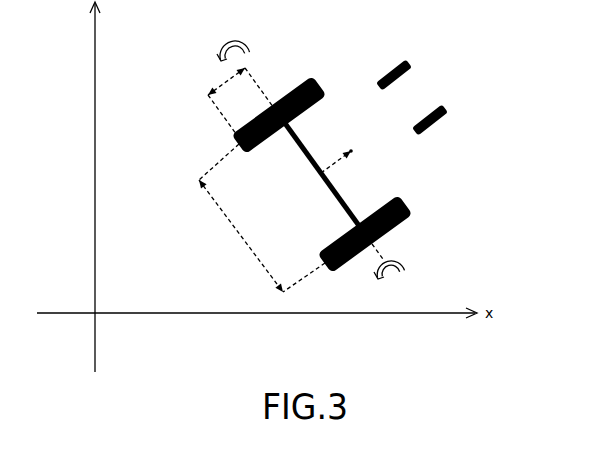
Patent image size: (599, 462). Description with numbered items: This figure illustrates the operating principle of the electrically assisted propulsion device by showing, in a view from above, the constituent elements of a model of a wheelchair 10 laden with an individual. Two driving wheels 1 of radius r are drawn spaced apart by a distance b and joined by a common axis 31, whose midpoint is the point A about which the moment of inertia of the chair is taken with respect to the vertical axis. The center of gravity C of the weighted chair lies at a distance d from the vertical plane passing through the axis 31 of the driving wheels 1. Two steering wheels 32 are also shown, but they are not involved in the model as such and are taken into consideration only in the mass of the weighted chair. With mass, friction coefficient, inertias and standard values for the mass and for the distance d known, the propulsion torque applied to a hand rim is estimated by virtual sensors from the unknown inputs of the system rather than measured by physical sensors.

The inverted pendulum type vehicle 10 is at (188, 138).
The driving wheels 1 is at (268, 150).
The axis of the wheels 31 is at (341, 200).
The steering wheels 32 is at (417, 68).